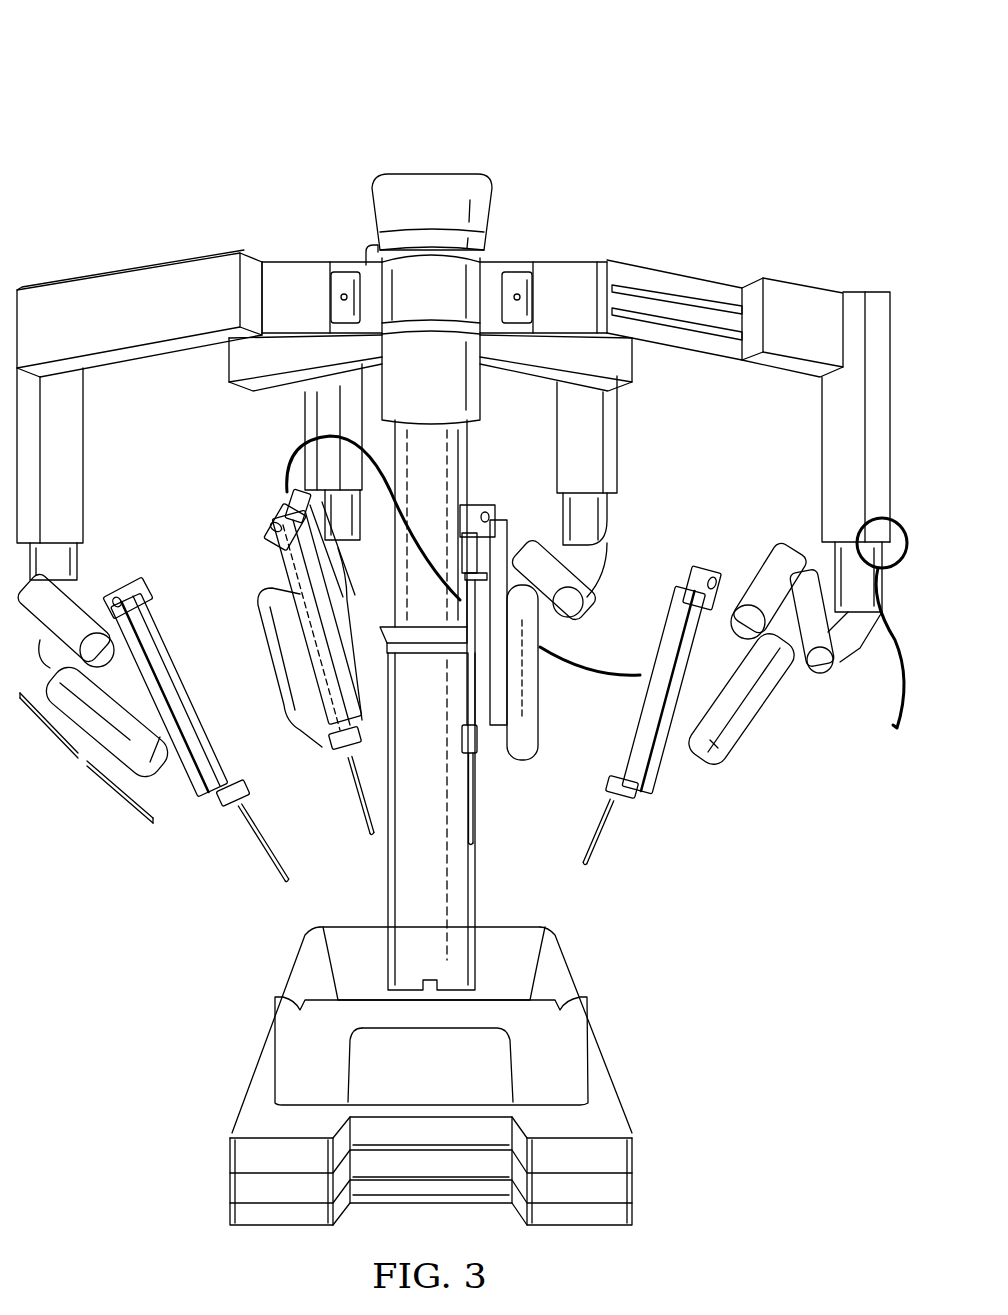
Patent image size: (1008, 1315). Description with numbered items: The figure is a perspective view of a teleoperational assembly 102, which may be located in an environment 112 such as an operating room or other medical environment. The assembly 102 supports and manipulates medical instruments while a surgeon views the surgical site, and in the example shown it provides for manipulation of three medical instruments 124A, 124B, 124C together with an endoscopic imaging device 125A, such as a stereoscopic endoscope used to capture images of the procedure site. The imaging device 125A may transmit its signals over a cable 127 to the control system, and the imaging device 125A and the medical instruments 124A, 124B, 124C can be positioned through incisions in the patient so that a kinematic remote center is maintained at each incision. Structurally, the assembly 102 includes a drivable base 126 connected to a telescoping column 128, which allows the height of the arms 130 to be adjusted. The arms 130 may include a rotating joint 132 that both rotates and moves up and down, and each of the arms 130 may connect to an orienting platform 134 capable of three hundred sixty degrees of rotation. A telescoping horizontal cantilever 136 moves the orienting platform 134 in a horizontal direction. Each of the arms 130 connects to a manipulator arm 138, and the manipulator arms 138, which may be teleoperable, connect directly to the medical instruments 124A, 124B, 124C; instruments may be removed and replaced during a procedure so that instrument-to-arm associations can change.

The teleoperational assembly 102 is at (217, 69).
The environment 112 is at (545, 150).
The medical instrument 124A is at (213, 672).
The medical instrument 124B is at (476, 793).
The medical instrument 124C is at (628, 737).
The endoscopic imaging device 125A is at (285, 505).
The drivable base 126 is at (613, 1113).
The cable 127 is at (896, 677).
The telescoping column 128 is at (395, 880).
The arms 130 is at (847, 264).
The rotating joint 132 is at (835, 556).
The orienting platform 134 is at (417, 280).
The telescoping horizontal cantilever 136 is at (448, 170).
The manipulator arm 138 is at (78, 753).